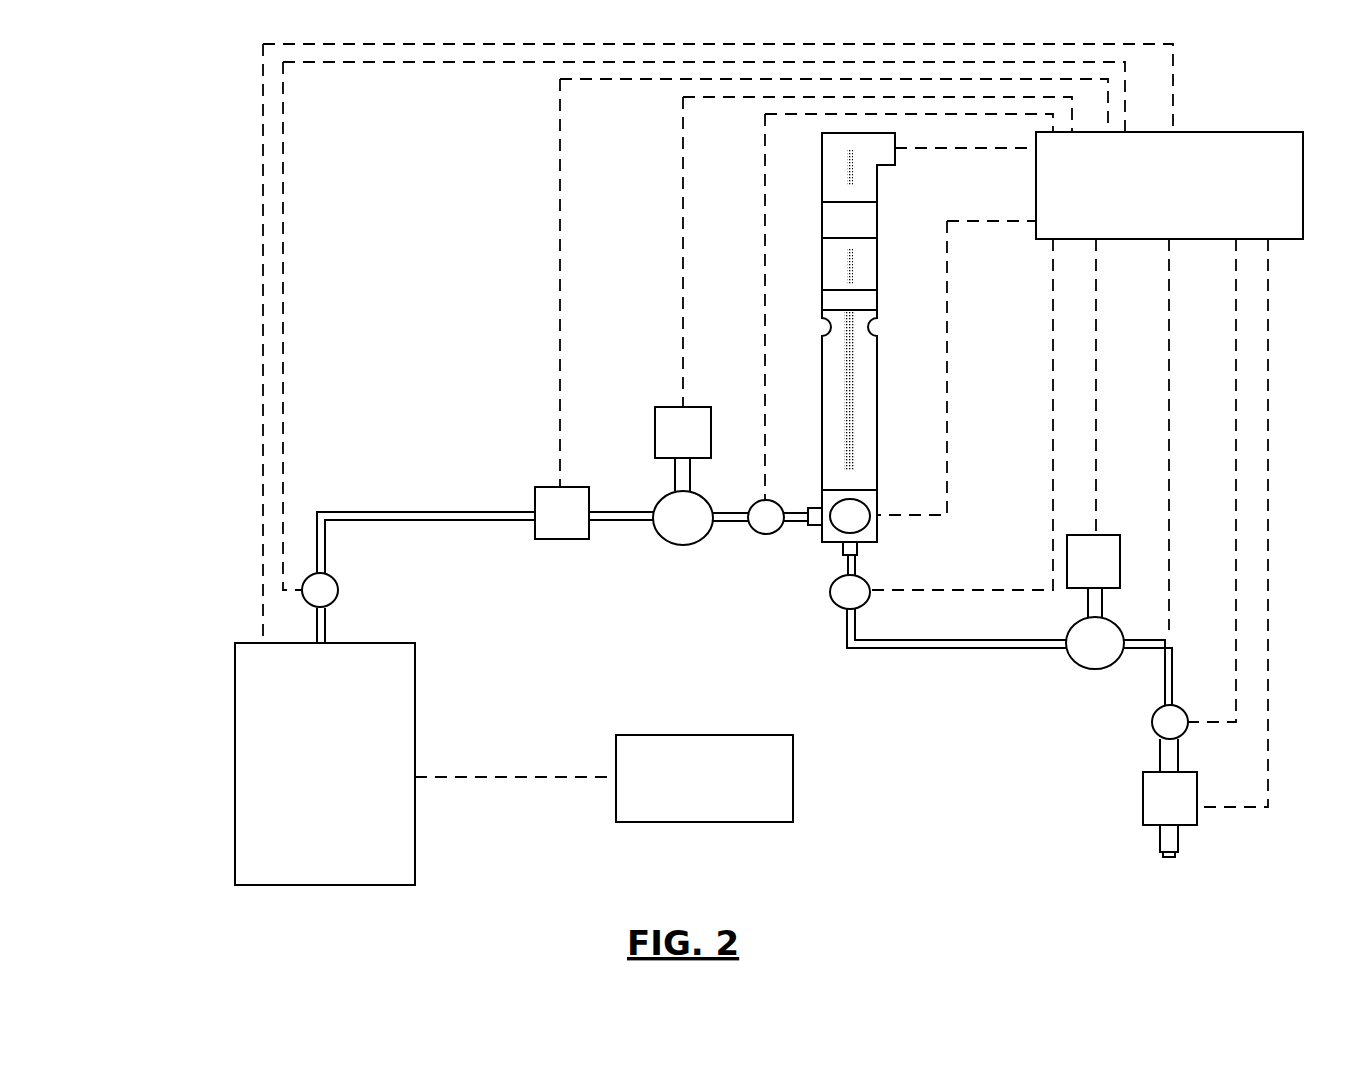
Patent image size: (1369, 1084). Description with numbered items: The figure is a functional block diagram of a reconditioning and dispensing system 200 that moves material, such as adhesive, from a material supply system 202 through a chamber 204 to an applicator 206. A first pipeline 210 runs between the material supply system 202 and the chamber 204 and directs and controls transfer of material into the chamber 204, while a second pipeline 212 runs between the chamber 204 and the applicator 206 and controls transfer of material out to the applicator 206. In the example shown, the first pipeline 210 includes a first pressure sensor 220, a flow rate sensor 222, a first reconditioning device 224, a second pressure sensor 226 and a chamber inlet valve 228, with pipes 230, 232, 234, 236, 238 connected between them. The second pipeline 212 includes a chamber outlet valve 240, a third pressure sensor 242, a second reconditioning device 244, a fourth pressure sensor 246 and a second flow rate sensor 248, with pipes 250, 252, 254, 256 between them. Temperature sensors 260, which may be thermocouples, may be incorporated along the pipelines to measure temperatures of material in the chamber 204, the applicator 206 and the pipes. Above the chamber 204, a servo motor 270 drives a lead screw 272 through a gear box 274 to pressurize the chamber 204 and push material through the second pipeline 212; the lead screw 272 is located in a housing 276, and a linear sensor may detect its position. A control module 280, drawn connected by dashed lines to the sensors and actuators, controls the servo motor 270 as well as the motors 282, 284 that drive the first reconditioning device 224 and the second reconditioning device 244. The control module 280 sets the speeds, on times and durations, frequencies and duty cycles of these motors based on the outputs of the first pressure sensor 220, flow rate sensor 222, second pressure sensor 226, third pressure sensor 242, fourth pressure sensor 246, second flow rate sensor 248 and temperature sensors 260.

The reconditioning and dispensing system 200 is at (160, 98).
The material supply system 202 is at (243, 643).
The chamber 204 is at (877, 535).
The applicator 206 is at (1163, 838).
The first pipeline 210 is at (417, 426).
The second pipeline 212 is at (908, 716).
The first pressure sensor 220 is at (338, 590).
The flow rate sensor 222 is at (560, 539).
The first reconditioning device 224 is at (680, 545).
The second pressure sensor 226 is at (766, 536).
The chamber inlet valve 228 is at (812, 527).
The pipe 230 is at (327, 625).
The pipe 232 is at (417, 512).
The pipe 234 is at (633, 512).
The pipe 236 is at (725, 526).
The pipe 238 is at (794, 526).
The chamber outlet valve 240 is at (857, 548).
The third pressure sensor 242 is at (868, 600).
The second reconditioning device 244 is at (1073, 662).
The fourth pressure sensor 246 is at (1152, 722).
The second flow rate sensor 248 is at (1143, 800).
The pipe 250 is at (855, 568).
The pipe 252 is at (968, 650).
The pipe 254 is at (1165, 668).
The pipe 256 is at (1163, 757).
The temperature sensors 260 is at (636, 735).
The servo motor 270 is at (877, 180).
The lead screw 272 is at (852, 370).
The gear box 274 is at (877, 272).
The housing 276 is at (877, 412).
The control module 280 is at (1238, 132).
The motor 282 is at (670, 407).
The motor 284 is at (1100, 535).